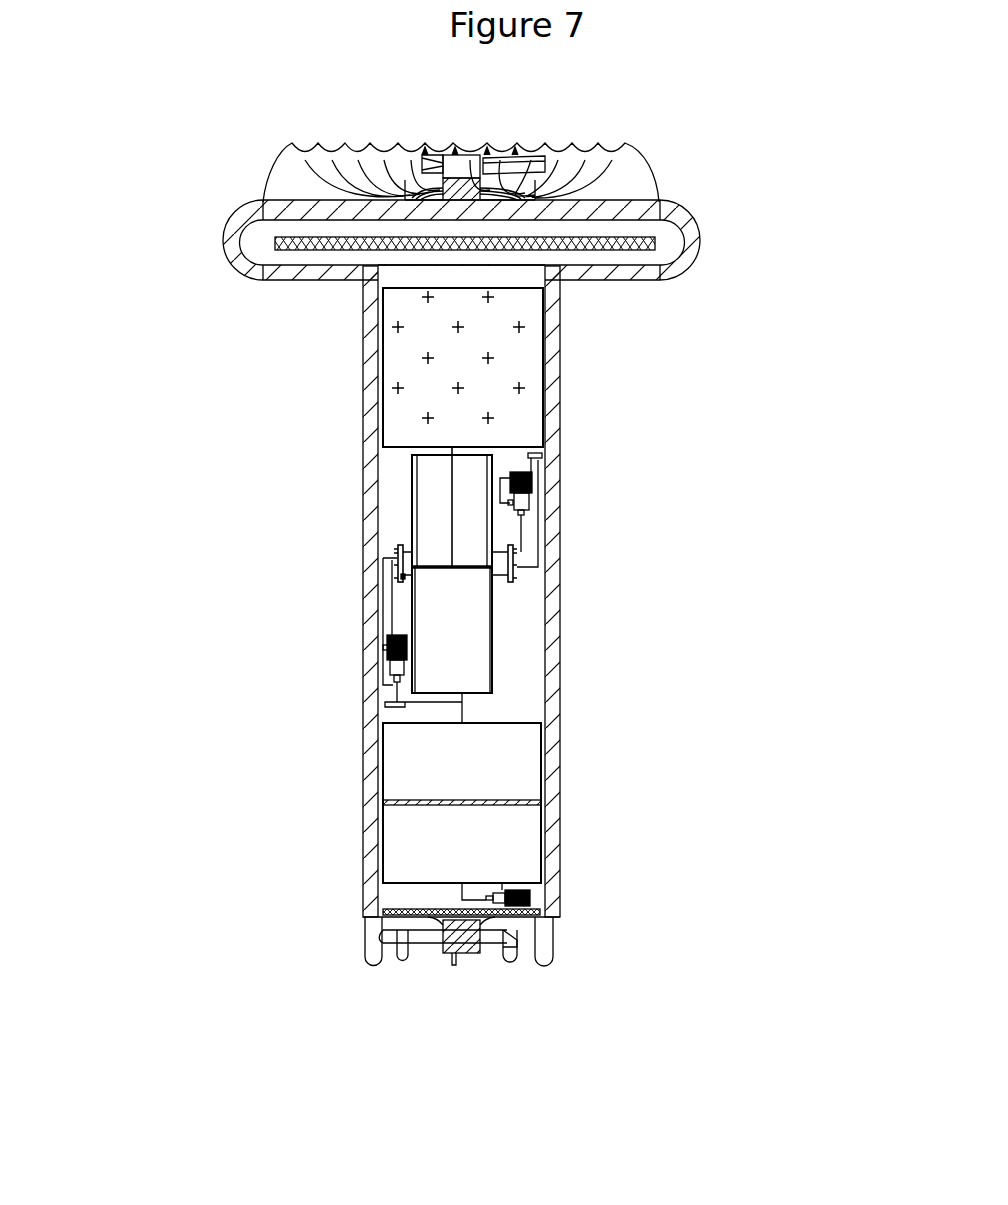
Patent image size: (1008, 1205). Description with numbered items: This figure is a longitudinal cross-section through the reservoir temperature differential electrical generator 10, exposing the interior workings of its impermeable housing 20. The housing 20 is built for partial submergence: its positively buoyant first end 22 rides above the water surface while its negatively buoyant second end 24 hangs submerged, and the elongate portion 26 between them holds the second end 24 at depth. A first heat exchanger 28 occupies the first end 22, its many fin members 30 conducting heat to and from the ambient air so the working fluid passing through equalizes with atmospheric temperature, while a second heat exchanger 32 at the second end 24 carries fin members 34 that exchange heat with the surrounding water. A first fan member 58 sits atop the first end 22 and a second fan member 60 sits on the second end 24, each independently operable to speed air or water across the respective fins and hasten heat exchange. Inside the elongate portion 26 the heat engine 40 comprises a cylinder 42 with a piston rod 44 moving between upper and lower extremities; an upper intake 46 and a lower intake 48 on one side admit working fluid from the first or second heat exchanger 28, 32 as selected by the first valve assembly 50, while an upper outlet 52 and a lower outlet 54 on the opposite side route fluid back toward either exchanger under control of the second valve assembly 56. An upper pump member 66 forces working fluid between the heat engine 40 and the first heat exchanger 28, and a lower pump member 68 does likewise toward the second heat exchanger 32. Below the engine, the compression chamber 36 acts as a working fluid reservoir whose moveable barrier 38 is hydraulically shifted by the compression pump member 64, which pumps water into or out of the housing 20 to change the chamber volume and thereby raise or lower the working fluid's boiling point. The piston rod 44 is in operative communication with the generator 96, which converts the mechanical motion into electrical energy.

The reservoir temperature differential electrical generator 10 is at (147, 189).
The impermeable housing 20 is at (765, 510).
The first end 22 is at (678, 218).
The second end 24 is at (560, 917).
The elongate portion 26 is at (563, 672).
The first heat exchanger 28 is at (281, 250).
The fin members 30 is at (620, 141).
The second heat exchanger 32 is at (385, 917).
The fin members 34 is at (545, 962).
The compression chamber 36 is at (462, 803).
The moveable barrier 38 is at (480, 800).
The heat engine 40 is at (268, 455).
The cylinder 42 is at (407, 478).
The piston rod 44 is at (450, 492).
The upper intake 46 is at (410, 545).
The lower intake 48 is at (405, 578).
The first valve assembly 50 is at (405, 567).
The upper outlet 52 is at (500, 538).
The lower outlet 54 is at (510, 580).
The second valve assembly 56 is at (515, 555).
The first fan member 58 is at (497, 165).
The second fan member 60 is at (420, 970).
The compression pump member 64 is at (532, 896).
The upper pump member 66 is at (530, 477).
The lower pump member 68 is at (385, 657).
The generator 96 is at (513, 345).